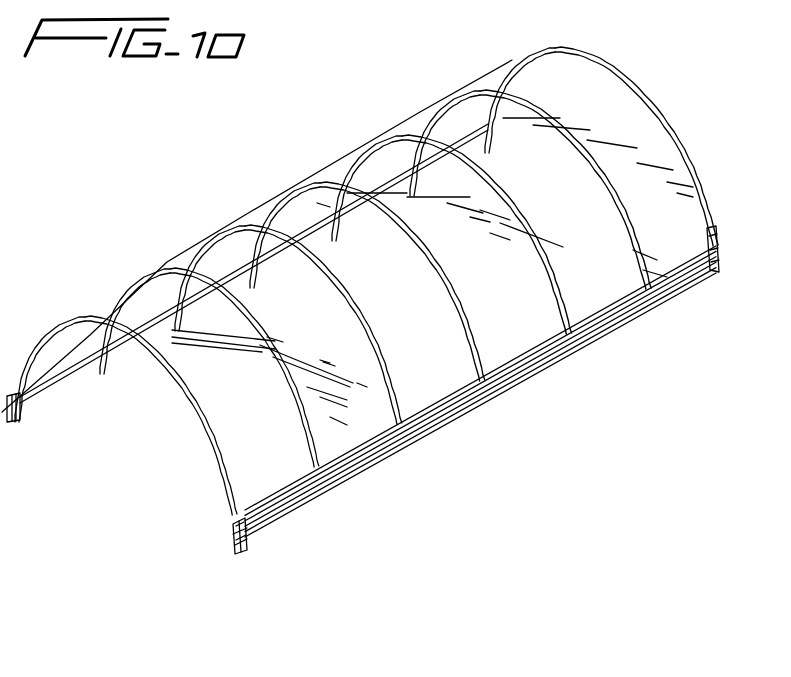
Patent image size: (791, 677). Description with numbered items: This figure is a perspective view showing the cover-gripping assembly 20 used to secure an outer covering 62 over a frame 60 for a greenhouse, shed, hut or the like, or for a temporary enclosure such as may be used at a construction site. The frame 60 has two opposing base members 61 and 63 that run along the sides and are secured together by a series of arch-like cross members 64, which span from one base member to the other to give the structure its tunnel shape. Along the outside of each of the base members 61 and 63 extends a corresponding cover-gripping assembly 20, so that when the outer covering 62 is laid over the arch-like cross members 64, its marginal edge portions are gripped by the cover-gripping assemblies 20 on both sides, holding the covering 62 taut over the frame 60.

The frame 60 is at (215, 516).
The base member 61 is at (66, 385).
The outer covering 62 is at (422, 397).
The base member 63 is at (234, 548).
The arch-like cross member 64 is at (181, 398).
The cover-gripping assembly 20 is at (4, 423).